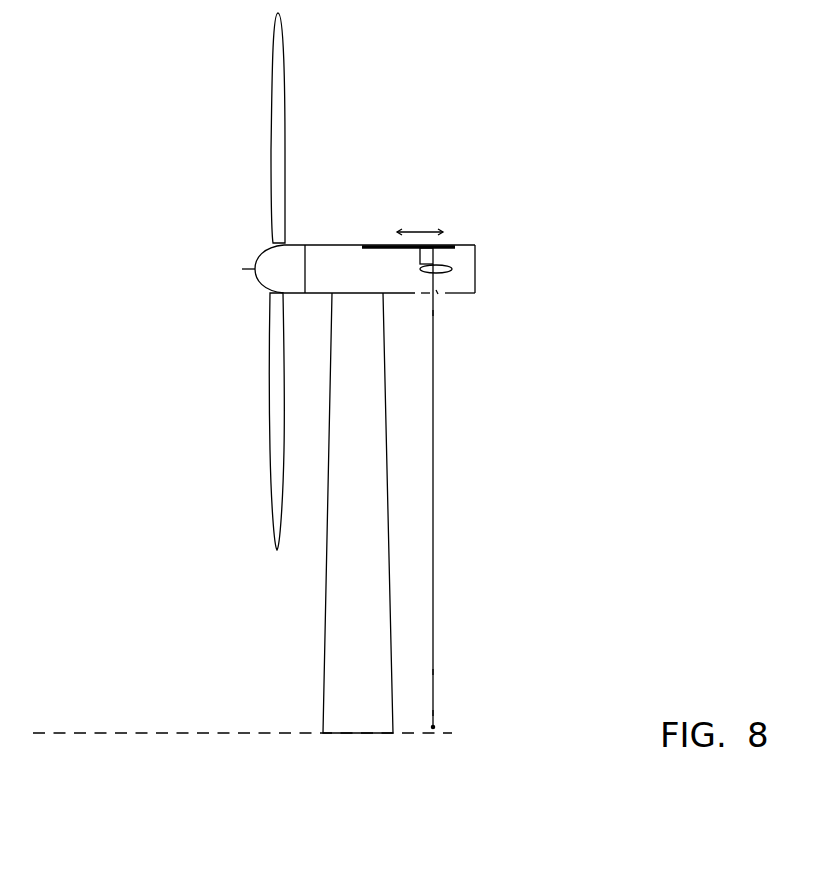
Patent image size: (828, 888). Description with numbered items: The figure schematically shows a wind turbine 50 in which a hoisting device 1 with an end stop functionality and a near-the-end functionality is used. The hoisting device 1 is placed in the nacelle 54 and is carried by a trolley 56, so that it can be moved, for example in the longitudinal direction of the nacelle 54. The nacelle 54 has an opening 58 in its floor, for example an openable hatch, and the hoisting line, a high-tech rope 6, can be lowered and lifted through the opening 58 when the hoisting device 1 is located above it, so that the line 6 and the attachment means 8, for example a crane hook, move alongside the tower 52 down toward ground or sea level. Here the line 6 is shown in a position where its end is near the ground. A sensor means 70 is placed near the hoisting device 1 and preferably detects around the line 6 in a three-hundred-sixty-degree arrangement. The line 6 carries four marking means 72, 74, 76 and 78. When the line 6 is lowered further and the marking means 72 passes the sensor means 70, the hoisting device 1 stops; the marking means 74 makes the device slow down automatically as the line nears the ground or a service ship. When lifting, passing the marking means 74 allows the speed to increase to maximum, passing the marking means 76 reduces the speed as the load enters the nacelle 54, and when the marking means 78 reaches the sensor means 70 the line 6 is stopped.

The wind turbine 50 is at (222, 325).
The hoisting device 1 is at (412, 259).
The tower 52 is at (325, 598).
The nacelle 54 is at (350, 245).
The trolley 56 is at (447, 245).
The marking means 72 is at (440, 248).
The sensor means 70 is at (452, 268).
The hoisting line 6 is at (433, 407).
The opening 58 is at (437, 293).
The marking means 74 is at (433, 313).
The marking means 76 is at (433, 672).
The marking means 78 is at (433, 713).
The attachment means 8 is at (433, 725).